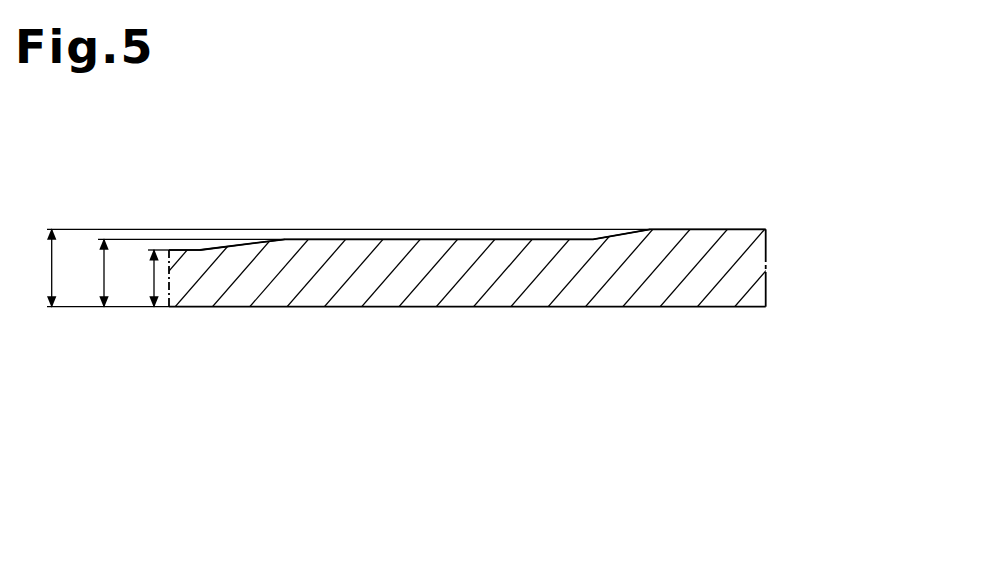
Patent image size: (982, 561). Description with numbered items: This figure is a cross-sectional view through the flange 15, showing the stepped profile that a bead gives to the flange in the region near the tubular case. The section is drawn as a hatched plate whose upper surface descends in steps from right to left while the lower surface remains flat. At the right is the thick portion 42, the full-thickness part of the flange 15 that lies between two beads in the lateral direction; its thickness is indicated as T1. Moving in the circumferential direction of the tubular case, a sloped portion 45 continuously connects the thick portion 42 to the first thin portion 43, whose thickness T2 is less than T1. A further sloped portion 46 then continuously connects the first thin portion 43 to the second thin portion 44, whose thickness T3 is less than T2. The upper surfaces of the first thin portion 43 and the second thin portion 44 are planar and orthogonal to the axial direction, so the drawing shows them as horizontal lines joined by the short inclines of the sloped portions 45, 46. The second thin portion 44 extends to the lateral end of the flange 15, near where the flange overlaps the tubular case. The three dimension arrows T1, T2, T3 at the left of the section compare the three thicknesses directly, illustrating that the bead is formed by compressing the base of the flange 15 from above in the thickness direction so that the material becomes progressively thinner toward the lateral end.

The flange 15 is at (455, 307).
The thick portion 42 is at (722, 228).
The first thin portion 43 is at (445, 238).
The second thin portion 44 is at (200, 249).
The sloped portion 45 is at (634, 230).
The further sloped portion 46 is at (256, 242).
The thickness of the thick portion T1 is at (50, 274).
The thickness of the first thin portion T2 is at (104, 277).
The thickness of the second thin portion T3 is at (152, 284).